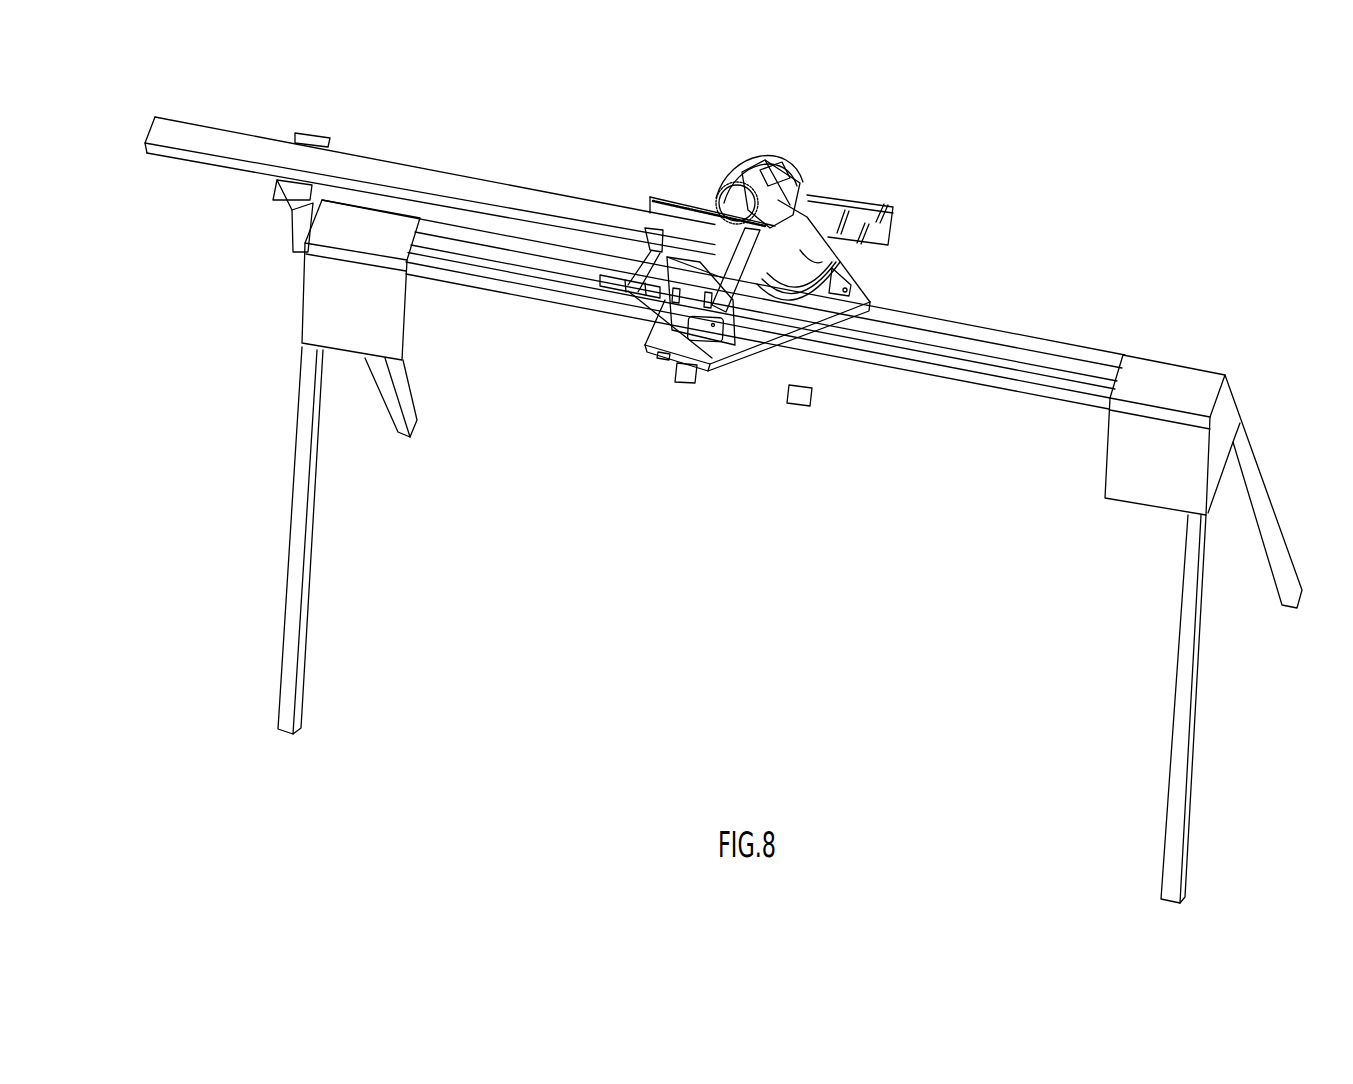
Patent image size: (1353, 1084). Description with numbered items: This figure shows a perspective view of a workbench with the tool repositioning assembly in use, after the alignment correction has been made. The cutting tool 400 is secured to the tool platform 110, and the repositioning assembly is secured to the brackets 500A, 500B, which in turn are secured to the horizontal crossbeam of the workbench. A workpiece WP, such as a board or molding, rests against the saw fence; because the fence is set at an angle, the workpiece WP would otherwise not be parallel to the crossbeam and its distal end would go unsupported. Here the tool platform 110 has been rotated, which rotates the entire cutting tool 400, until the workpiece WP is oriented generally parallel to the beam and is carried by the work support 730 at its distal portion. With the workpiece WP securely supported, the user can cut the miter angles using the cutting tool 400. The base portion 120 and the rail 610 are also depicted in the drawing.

The workpiece WP is at (493, 195).
The work support 730 is at (268, 207).
The cutting tool 400 is at (776, 152).
The bracket 500B is at (875, 215).
The bracket 500A is at (663, 360).
The tool platform 110 is at (857, 302).
The base 120 is at (823, 363).
The rail / track 610 is at (1020, 333).